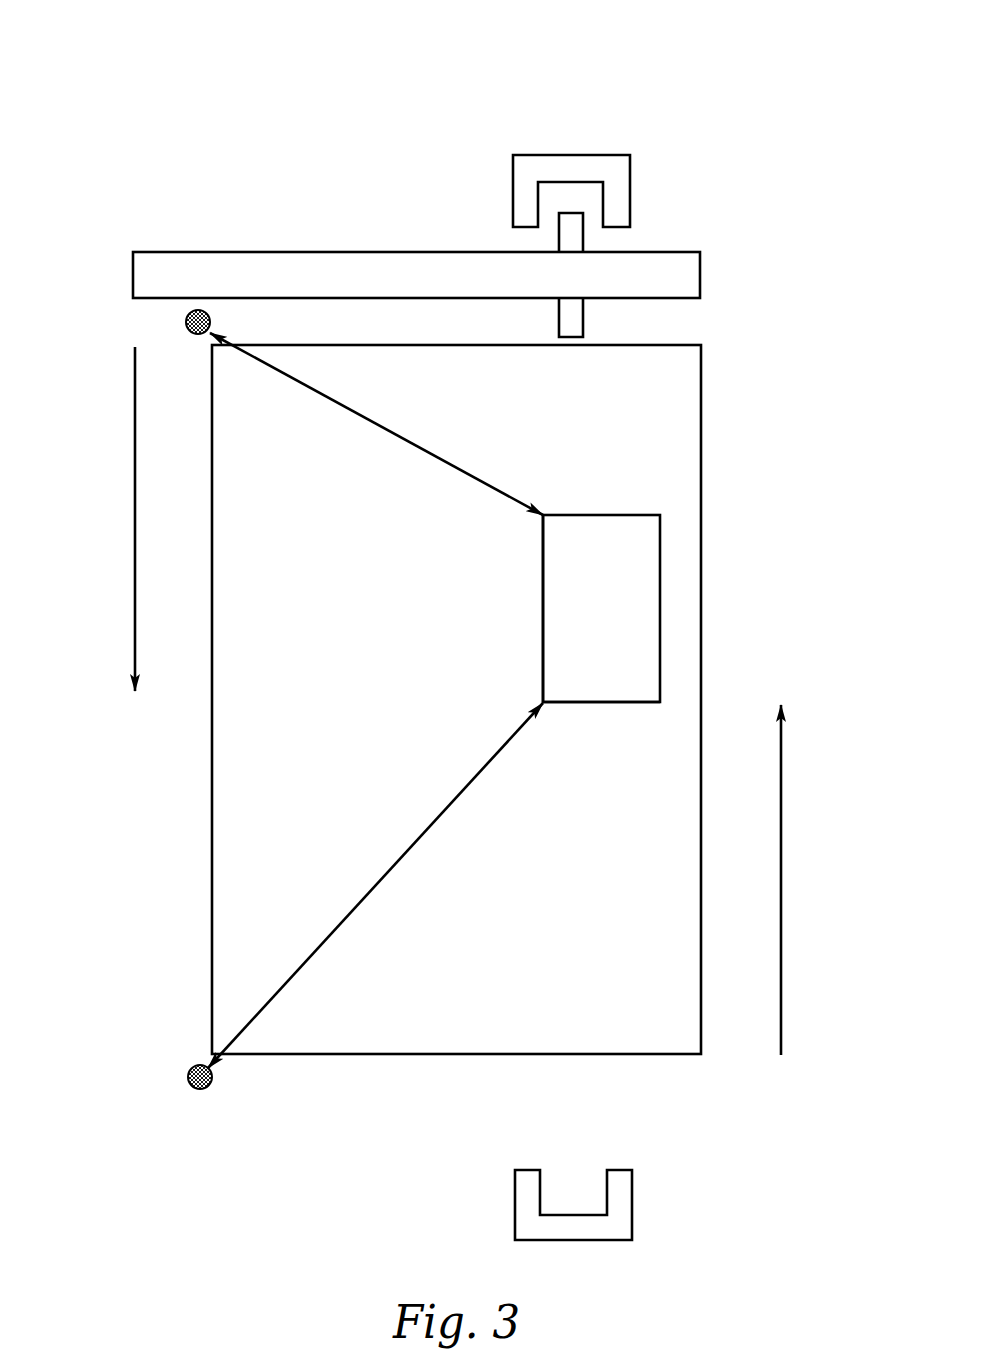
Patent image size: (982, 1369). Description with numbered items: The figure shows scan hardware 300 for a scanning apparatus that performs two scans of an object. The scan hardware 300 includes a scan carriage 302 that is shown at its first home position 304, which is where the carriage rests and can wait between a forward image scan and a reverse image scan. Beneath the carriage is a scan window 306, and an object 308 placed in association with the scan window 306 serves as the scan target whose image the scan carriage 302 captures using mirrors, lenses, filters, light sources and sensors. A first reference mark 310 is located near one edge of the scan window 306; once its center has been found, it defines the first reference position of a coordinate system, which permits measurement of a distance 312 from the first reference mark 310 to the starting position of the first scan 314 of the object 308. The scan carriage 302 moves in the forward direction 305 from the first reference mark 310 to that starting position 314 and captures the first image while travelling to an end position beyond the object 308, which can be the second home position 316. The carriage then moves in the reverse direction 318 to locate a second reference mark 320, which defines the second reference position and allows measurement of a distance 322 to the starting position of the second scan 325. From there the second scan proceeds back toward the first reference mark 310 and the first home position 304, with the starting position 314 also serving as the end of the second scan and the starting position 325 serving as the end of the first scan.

The scan hardware 300 is at (210, 93).
The scan carriage 302 is at (371, 252).
The first home position 304 is at (574, 155).
The forward direction 305 is at (135, 438).
The scan window 306 is at (212, 501).
The object 308 is at (544, 574).
The first reference mark 310 is at (186, 323).
The distance 312 is at (372, 421).
The starting position of the first scan 314 is at (601, 515).
The second home position 316 is at (528, 1170).
The reverse direction 318 is at (782, 878).
The second reference mark 320 is at (187, 1081).
The distance 322 is at (377, 885).
The starting position of the second scan 325 is at (601, 702).